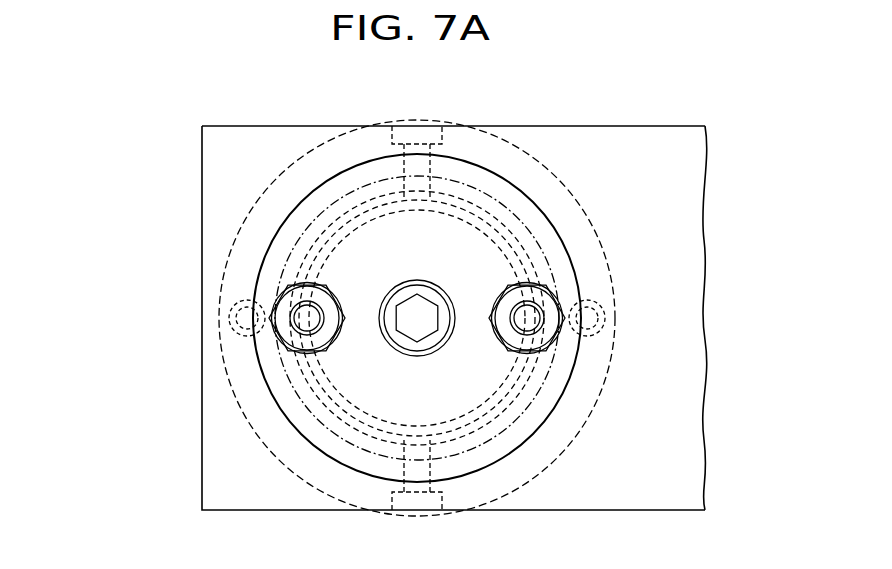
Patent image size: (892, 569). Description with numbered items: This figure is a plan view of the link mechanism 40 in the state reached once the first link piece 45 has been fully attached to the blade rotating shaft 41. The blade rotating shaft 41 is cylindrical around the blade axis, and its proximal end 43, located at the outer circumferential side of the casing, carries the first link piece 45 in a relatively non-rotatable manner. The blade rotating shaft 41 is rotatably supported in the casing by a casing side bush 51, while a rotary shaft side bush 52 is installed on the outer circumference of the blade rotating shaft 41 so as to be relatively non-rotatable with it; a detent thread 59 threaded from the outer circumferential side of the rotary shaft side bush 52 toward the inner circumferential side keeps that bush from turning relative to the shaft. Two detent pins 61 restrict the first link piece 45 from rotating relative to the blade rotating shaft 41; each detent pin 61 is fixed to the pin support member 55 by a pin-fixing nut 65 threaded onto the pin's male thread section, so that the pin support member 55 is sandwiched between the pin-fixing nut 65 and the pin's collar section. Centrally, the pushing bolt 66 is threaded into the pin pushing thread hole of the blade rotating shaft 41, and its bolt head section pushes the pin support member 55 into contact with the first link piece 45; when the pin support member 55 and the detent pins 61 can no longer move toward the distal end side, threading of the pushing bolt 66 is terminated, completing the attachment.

The link mechanism 40 is at (724, 133).
The blade rotating shaft 41 is at (327, 397).
The proximal end 43 is at (327, 397).
The first link piece 45 is at (660, 137).
The casing side bush 51 is at (558, 458).
The rotary shaft side bush 52 is at (493, 438).
The pin support member 55 is at (563, 400).
The detent thread 59 is at (385, 130).
The detent pin 61 is at (306, 302).
The pin-fixing nut 65 is at (288, 303).
The pushing bolt 66 is at (435, 285).